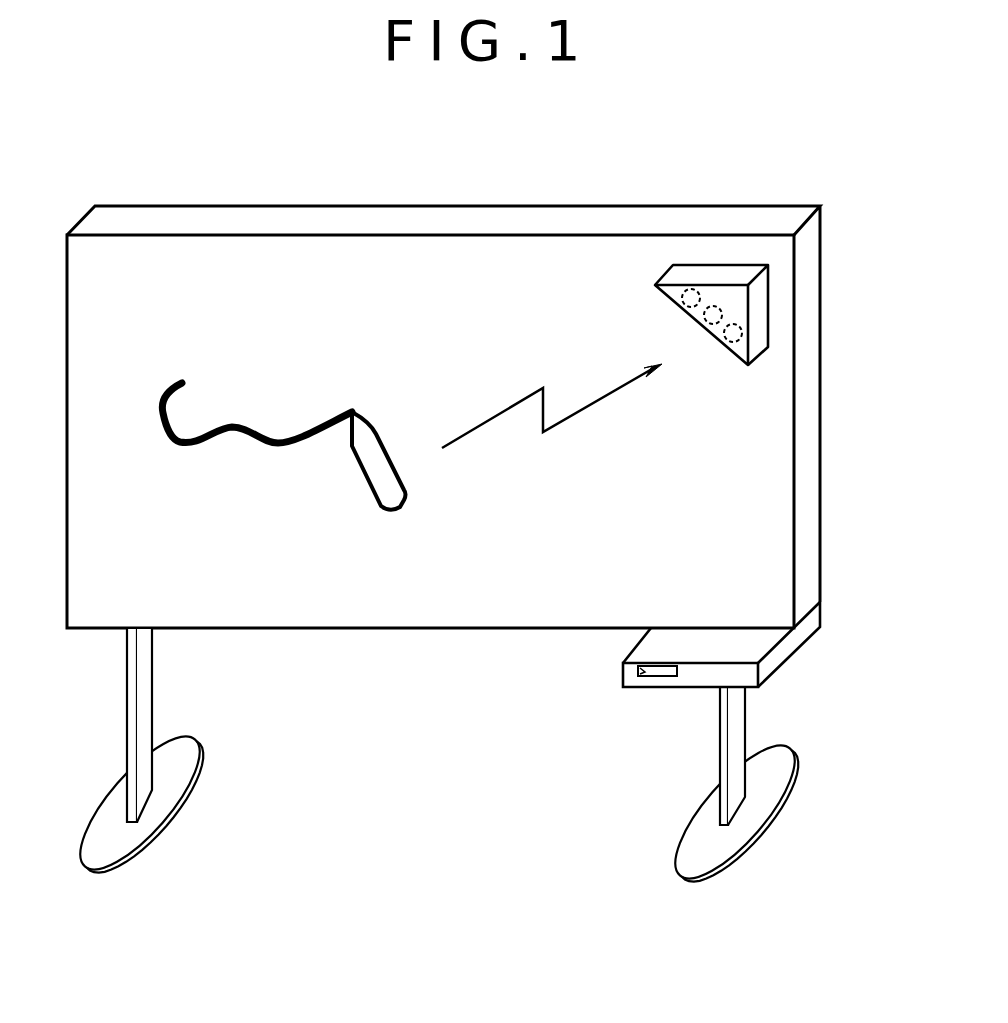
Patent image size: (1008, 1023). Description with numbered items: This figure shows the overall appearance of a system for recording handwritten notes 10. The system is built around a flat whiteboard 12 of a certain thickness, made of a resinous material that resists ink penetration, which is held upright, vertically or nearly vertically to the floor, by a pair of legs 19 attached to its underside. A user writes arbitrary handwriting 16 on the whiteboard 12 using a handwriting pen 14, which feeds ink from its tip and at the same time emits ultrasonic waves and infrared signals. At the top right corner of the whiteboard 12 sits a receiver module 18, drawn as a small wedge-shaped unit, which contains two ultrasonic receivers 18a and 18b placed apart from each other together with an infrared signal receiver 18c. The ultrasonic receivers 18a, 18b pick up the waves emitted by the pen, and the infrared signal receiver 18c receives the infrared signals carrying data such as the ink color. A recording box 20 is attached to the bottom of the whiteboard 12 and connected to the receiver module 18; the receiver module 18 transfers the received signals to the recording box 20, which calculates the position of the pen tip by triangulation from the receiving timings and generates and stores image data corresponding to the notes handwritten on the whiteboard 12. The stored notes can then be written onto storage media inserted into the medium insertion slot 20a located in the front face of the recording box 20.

The system for recording handwritten notes 10 is at (383, 797).
The whiteboard 12 is at (418, 256).
The handwriting pen 14 is at (367, 469).
The handwriting 16 is at (260, 437).
The receiver module 18 is at (773, 273).
The ultrasonic receiver 18a is at (689, 289).
The ultrasonic receiver 18b is at (745, 333).
The infrared signal receiver 18c is at (713, 306).
The legs 19 is at (127, 701).
The recording box 20 is at (750, 670).
The medium insertion slot 20a is at (658, 677).